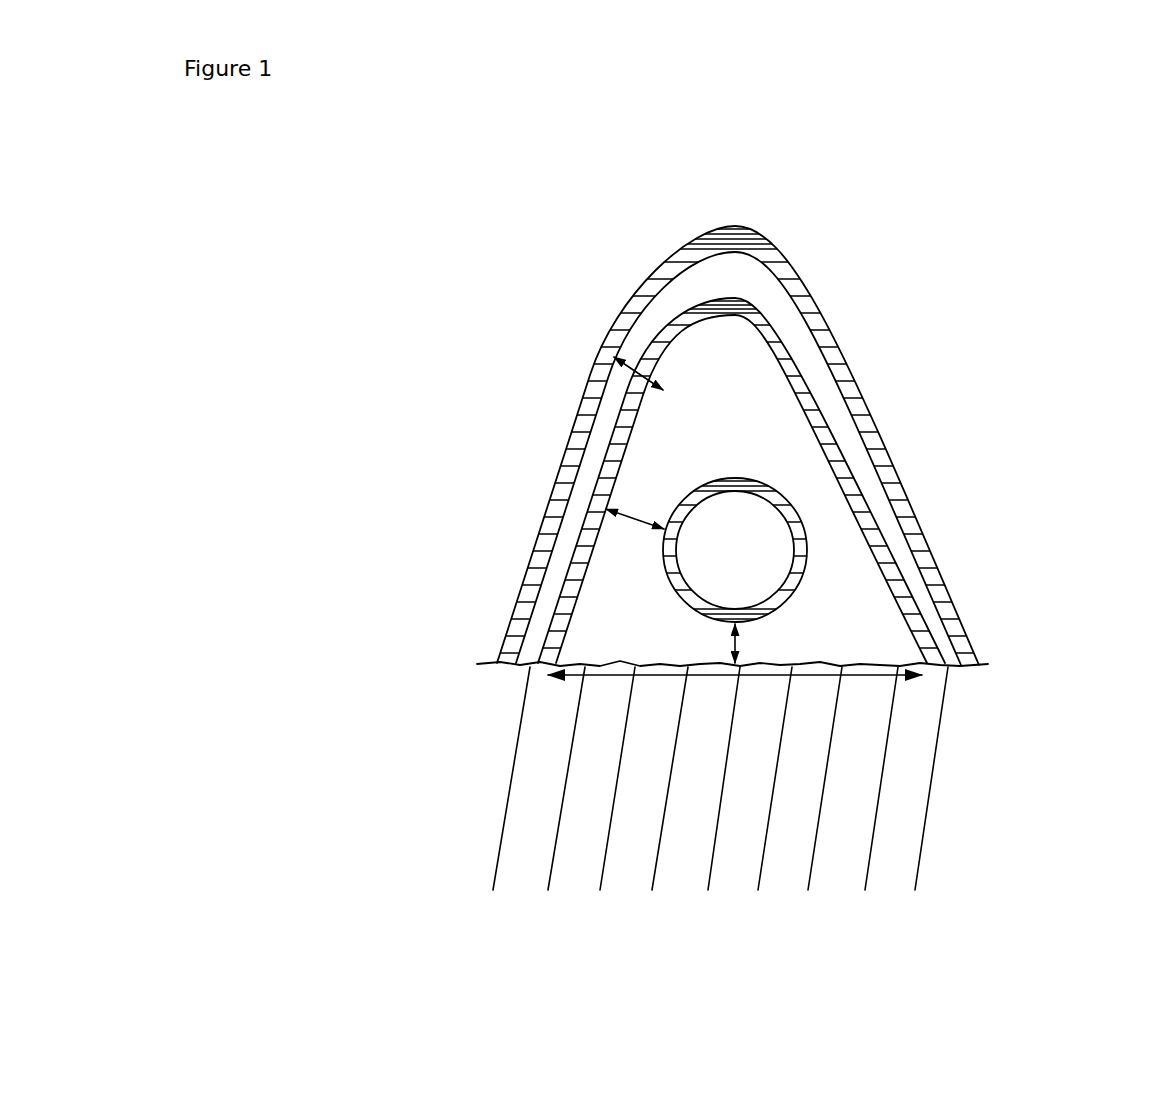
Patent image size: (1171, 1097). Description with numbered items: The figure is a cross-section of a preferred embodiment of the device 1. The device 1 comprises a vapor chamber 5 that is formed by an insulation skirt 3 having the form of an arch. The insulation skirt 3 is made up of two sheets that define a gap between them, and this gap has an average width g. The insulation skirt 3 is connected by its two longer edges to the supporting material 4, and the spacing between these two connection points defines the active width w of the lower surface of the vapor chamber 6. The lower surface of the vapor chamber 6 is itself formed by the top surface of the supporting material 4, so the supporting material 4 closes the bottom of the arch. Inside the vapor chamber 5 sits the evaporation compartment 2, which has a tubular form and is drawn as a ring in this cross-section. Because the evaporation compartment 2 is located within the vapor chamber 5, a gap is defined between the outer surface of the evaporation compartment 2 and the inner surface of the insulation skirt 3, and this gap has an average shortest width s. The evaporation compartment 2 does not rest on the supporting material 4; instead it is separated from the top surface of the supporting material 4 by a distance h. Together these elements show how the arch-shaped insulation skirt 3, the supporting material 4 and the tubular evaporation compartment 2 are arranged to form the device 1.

The device 1 is at (627, 292).
The evaporation compartment 2 is at (802, 532).
The insulation skirt 3 is at (776, 333).
The supporting material 4 is at (898, 735).
The vapor chamber 5 is at (784, 437).
The lower surface of the vapor chamber 6 is at (813, 650).
The average width of the gap g is at (638, 374).
The average shortest width s is at (638, 538).
The distance h is at (715, 643).
The active width w is at (665, 683).